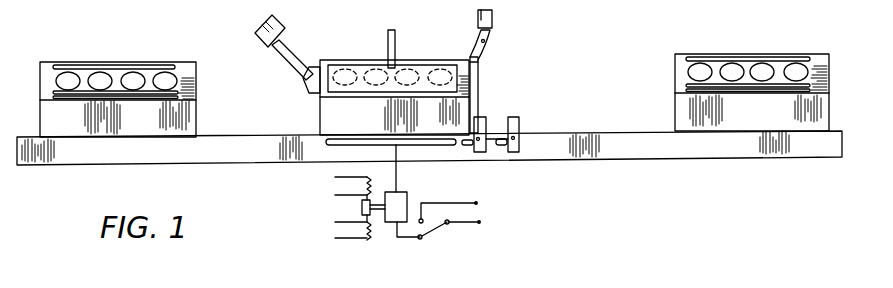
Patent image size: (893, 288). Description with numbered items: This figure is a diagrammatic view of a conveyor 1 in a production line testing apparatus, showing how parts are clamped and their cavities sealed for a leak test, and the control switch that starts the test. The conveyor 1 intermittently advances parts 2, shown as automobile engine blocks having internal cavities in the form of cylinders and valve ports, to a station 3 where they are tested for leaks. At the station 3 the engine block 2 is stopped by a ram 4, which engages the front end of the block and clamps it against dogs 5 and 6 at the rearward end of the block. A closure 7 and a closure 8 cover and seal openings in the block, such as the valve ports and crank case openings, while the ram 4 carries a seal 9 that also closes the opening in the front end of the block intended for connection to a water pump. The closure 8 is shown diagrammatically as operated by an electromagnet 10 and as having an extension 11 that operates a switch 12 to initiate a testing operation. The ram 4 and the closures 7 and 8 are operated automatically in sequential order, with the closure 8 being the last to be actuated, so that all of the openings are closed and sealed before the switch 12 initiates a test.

The conveyor 1 is at (611, 159).
The parts 2 is at (60, 62).
The station 3 is at (496, 72).
The ram 4 is at (288, 47).
The dog 5 is at (492, 24).
The dog 6 is at (487, 120).
The closure 7 is at (357, 69).
The closure 8 is at (426, 146).
The seal 9 is at (311, 84).
The electromagnet 10 is at (400, 200).
The extension 11 is at (397, 240).
The switch 12 is at (445, 228).